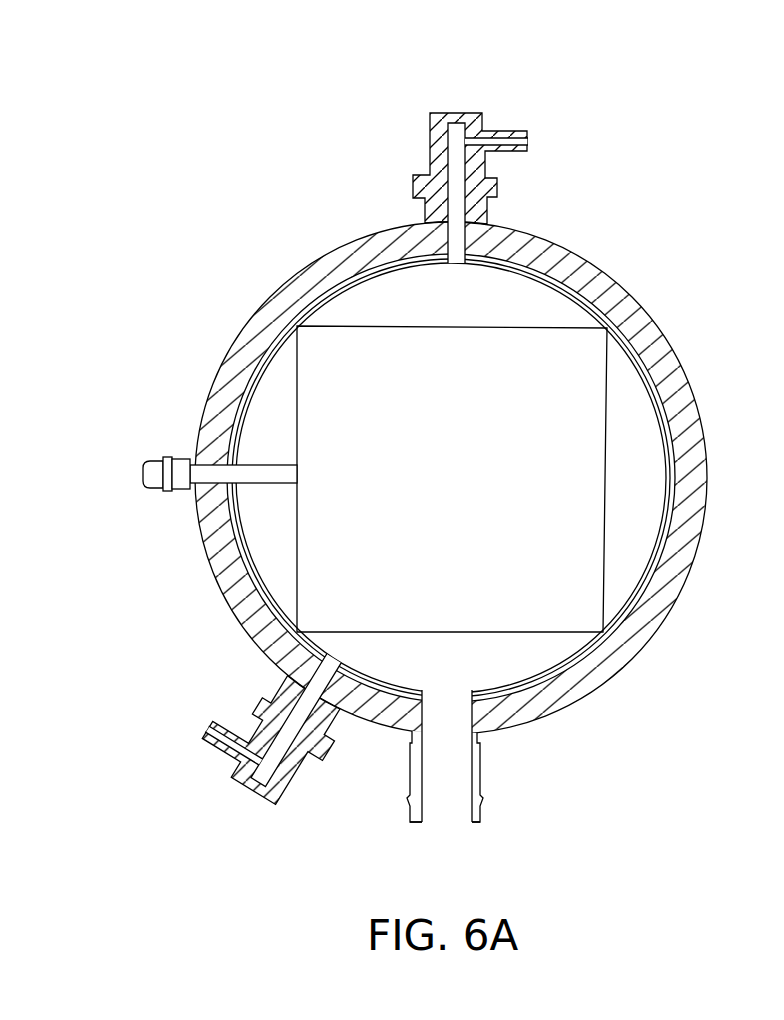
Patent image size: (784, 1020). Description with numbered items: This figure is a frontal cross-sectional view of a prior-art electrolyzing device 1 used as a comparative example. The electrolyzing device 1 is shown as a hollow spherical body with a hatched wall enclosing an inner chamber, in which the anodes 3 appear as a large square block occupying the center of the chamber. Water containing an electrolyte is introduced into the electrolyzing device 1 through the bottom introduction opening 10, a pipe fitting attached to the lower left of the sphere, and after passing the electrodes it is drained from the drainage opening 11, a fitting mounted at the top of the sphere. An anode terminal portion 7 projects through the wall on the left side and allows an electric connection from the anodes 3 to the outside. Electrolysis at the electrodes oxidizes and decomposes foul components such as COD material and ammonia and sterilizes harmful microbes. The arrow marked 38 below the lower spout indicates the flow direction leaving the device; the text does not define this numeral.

The electrolyzing device 1 is at (714, 362).
The anodes 3 is at (593, 592).
The anode terminal portion 7 is at (143, 474).
The bottom introduction opening 10 is at (196, 733).
The drainage opening 11 is at (528, 141).
The drain outlet flow direction 38 is at (442, 750).